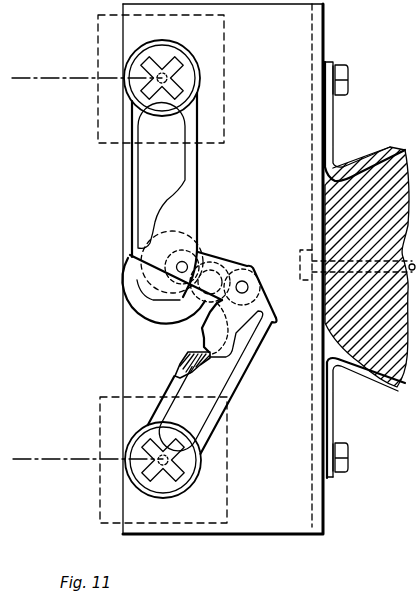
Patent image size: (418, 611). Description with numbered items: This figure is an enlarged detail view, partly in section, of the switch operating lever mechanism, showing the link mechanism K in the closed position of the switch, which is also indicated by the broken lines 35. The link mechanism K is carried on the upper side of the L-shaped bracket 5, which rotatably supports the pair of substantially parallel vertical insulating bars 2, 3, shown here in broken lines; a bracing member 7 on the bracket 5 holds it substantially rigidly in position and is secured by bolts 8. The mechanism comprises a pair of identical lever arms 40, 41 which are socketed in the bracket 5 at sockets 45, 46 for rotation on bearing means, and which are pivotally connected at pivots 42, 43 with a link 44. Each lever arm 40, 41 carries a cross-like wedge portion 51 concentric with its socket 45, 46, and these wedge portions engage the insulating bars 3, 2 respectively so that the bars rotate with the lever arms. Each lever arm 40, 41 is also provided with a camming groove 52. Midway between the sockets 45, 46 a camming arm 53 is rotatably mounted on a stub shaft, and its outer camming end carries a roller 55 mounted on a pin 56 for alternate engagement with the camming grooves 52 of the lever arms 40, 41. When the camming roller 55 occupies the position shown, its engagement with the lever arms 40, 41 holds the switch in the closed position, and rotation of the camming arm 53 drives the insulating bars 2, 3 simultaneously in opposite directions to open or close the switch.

The vertical insulating bar 2 is at (100, 423).
The vertical insulating bar 3 is at (107, 117).
The L-shaped bracket 5 is at (292, 527).
The bracing member 7 is at (334, 119).
The bolt 8 is at (348, 74).
The broken lines indicating closed position 35 is at (28, 77).
The lever arm 40 is at (193, 168).
The lever arm 41 is at (240, 393).
The pivot connection 42 is at (178, 274).
The pivot connection 43 is at (249, 282).
The link 44 is at (207, 258).
The socket 45 is at (186, 53).
The socket 46 is at (197, 481).
The cross-like wedge portion 51 is at (168, 78).
The camming groove 52 is at (165, 213).
The camming arm 53 is at (147, 280).
The camming roller 55 is at (211, 302).
The pin 56 is at (233, 266).
The link mechanism K is at (107, 237).